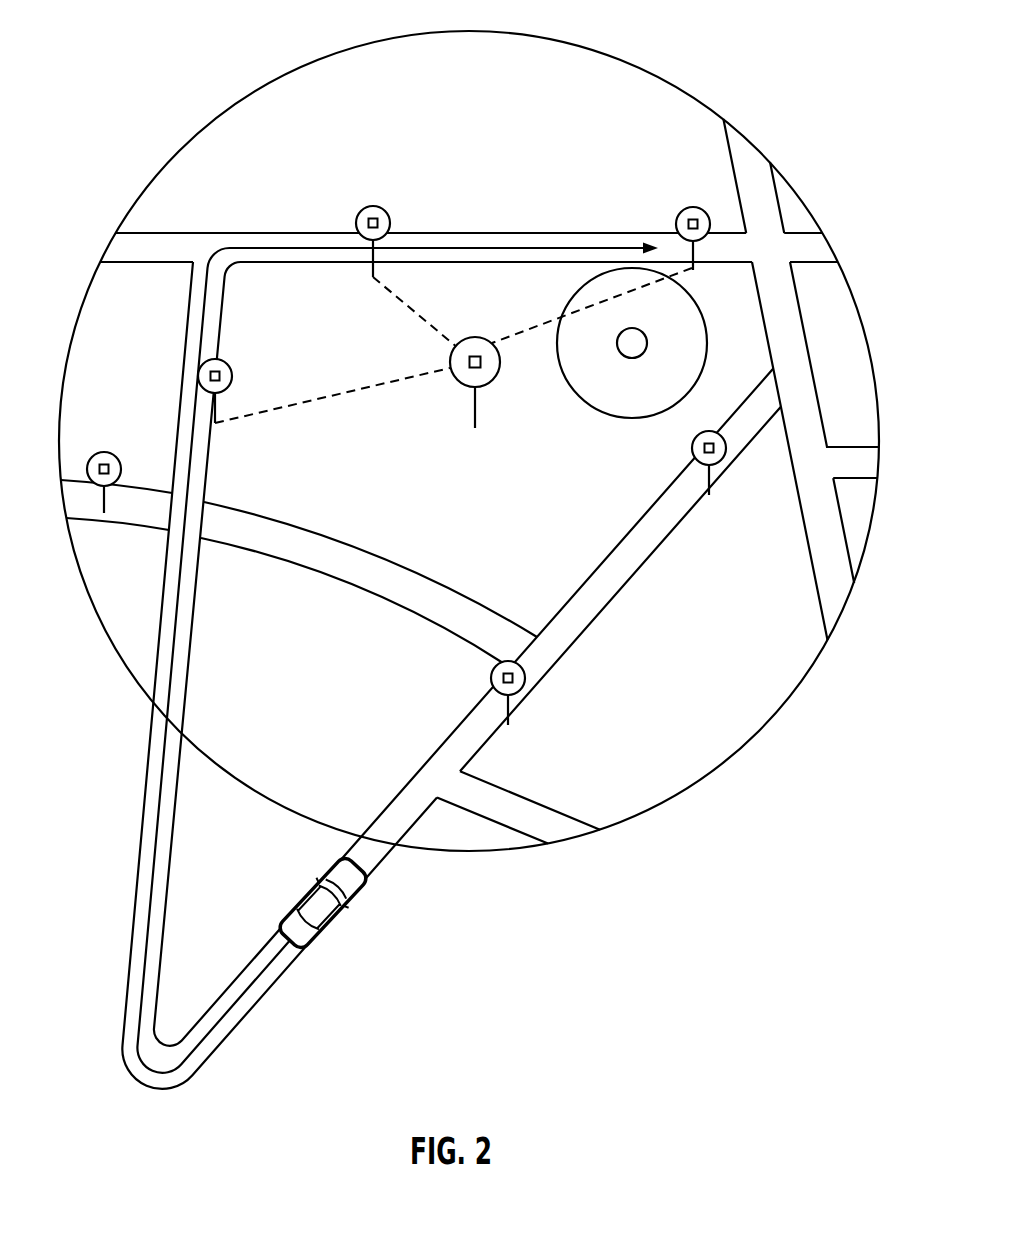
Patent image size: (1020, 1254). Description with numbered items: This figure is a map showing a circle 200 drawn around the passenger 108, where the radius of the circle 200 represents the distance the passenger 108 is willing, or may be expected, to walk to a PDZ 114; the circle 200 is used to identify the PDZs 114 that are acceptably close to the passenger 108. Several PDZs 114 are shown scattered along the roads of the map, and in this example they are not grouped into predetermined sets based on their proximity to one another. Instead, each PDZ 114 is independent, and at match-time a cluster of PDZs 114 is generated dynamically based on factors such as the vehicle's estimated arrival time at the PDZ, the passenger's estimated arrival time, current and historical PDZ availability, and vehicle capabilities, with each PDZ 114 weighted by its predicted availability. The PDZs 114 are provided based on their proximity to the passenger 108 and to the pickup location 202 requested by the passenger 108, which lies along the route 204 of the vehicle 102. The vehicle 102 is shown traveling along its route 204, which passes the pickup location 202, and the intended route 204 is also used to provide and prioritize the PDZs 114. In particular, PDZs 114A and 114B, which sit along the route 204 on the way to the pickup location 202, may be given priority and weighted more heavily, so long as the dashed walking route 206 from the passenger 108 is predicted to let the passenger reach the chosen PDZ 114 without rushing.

The circle 200 is at (385, 40).
The vehicle 102 is at (348, 917).
The passenger 108 is at (492, 386).
The PDZ 114 is at (693, 207).
The PDZ 114A is at (229, 363).
The PDZ 114B is at (373, 206).
The pickup location 202 is at (630, 418).
The route 204 is at (147, 910).
The walking route 206 is at (420, 312).